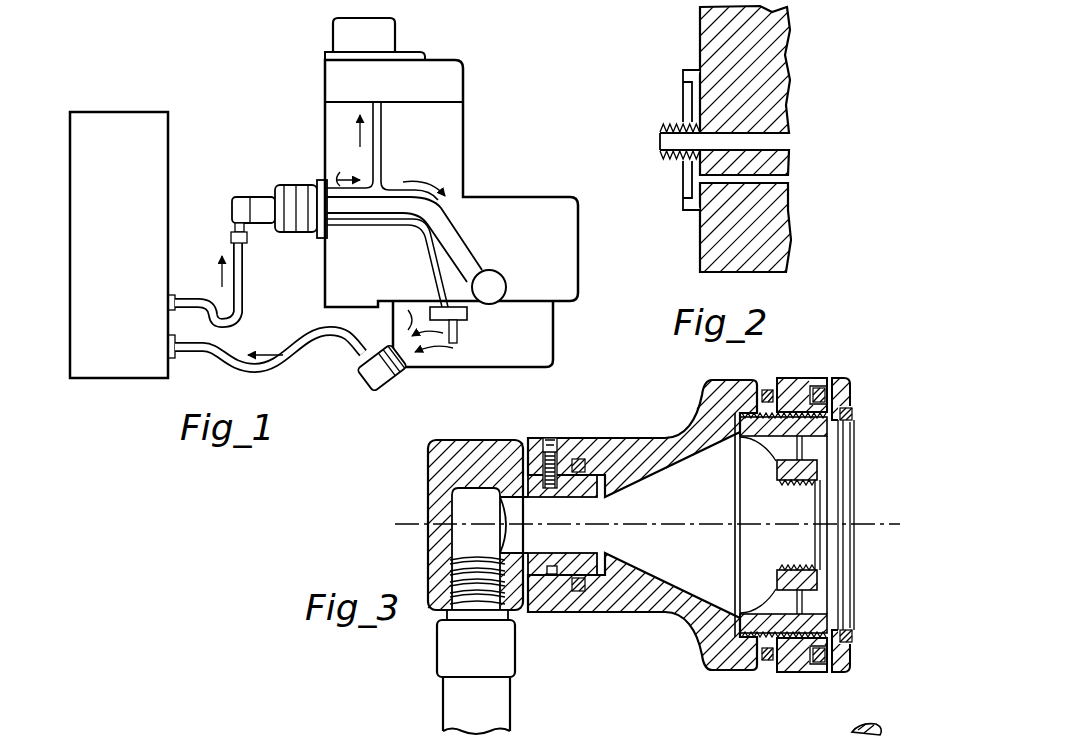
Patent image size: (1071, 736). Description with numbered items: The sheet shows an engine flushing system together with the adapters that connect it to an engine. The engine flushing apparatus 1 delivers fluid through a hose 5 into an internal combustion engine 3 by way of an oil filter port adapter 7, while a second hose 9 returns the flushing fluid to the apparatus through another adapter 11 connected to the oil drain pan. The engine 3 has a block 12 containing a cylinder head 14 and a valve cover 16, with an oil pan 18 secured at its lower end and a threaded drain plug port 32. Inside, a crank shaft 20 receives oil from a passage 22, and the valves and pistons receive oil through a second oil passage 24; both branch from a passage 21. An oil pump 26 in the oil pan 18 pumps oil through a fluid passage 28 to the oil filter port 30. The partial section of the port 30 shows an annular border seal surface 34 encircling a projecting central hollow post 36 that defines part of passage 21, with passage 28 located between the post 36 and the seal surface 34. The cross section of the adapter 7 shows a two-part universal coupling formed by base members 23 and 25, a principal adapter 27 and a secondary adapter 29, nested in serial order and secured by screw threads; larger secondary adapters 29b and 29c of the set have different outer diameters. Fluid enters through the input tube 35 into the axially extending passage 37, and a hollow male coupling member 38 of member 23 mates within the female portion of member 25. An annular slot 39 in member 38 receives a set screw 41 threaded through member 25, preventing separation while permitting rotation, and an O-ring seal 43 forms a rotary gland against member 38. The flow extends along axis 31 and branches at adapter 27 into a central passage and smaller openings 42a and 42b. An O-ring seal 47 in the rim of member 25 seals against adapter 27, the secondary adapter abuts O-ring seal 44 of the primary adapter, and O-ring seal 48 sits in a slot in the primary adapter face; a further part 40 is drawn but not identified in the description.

In FIG. 1, the engine flushing apparatus 1 is at (176, 141).
In FIG. 1, the internal combustion engine 3 is at (434, 215).
In FIG. 1, the hose 5 is at (244, 276).
In FIG. 3, the hose 5 is at (510, 693).
In FIG. 1, the oil filter port adapter 7 is at (265, 185).
In FIG. 1, the second hose 9 is at (318, 340).
In FIG. 1, the adapter 11 is at (389, 396).
In FIG. 1, the engine block 12 is at (463, 135).
In FIG. 2, the engine block 12 is at (762, 104).
In FIG. 1, the cylinder head 14 is at (463, 82).
In FIG. 1, the valve cover 16 is at (397, 28).
In FIG. 1, the oil pan 18 is at (555, 338).
In FIG. 1, the crank shaft 20 is at (508, 283).
In FIG. 1, the passage 21 is at (350, 145).
In FIG. 2, the passage 21 is at (766, 136).
In FIG. 1, the passage 22 is at (468, 241).
In FIG. 1, the second oil passage 24 is at (383, 145).
In FIG. 1, the oil pump 26 is at (462, 320).
In FIG. 1, the fluid passage 28 is at (436, 262).
In FIG. 2, the fluid passage 28 is at (766, 178).
In FIG. 1, the oil filter port 30 is at (321, 182).
In FIG. 2, the oil filter port 30 is at (668, 100).
In FIG. 1, the drain plug port 32 is at (393, 348).
In FIG. 2, the annular border seal surface 34 is at (683, 201).
In FIG. 2, the projecting central hollow post 36 is at (661, 150).
In FIG. 3, the base member 23 is at (498, 440).
In FIG. 3, the base member 25 is at (664, 438).
In FIG. 3, the principal adapter 27 is at (803, 675).
In FIG. 3, the secondary adapter 29 is at (858, 638).
In FIG. 3, the secondary adapter 29b is at (760, 725).
In FIG. 3, the secondary adapter 29c is at (848, 728).
In FIG. 3, the axis 31 is at (690, 525).
In FIG. 3, the input tube 35 is at (492, 518).
In FIG. 3, the axially extending passage 37 is at (550, 552).
In FIG. 3, the male coupling member 38 is at (580, 500).
In FIG. 3, the annular slot 39 is at (552, 575).
In FIG. 3, the retaining nut 40 is at (799, 485).
In FIG. 3, the set screw 41 is at (550, 438).
In FIG. 3, the opening 42a is at (787, 458).
In FIG. 3, the opening 42b is at (787, 590).
In FIG. 3, the O-ring seal 43 is at (580, 592).
In FIG. 3, the O-ring seal 44 is at (820, 390).
In FIG. 3, the O-ring seal 47 is at (768, 390).
In FIG. 3, the O-ring seal 48 is at (852, 412).